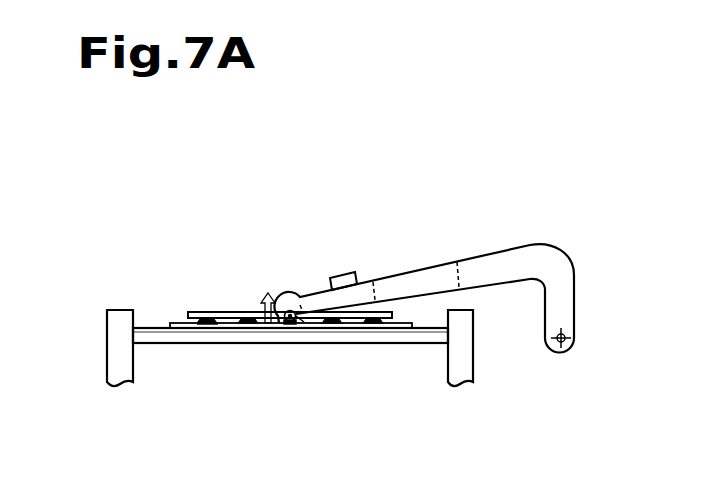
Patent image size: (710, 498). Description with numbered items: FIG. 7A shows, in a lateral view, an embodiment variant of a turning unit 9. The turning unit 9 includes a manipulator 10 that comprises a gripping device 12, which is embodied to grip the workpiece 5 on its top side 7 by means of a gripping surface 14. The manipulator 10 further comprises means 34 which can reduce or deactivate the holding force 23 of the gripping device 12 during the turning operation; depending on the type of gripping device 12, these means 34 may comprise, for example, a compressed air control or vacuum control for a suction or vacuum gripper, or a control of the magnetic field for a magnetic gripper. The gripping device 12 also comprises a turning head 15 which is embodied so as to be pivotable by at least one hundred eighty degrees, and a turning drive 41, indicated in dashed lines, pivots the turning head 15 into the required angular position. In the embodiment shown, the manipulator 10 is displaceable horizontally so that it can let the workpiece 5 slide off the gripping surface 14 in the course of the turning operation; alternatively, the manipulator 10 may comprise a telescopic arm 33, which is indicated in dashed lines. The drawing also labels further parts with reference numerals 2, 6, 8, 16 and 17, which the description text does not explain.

The seat adjustment device 2 is at (112, 202).
The workpiece 5 is at (177, 324).
The base carrier 6 is at (220, 330).
The top side 7 is at (228, 320).
The carrier beam 8 is at (150, 326).
The turning unit 9 is at (612, 123).
The manipulator 10 is at (385, 178).
The gripping device 12 is at (260, 313).
The gripping surface 14 is at (290, 330).
The turning head 15 is at (285, 305).
The pivot axis 16 is at (297, 325).
The handle pivot 17 is at (577, 330).
The holding force 23 is at (266, 300).
The telescopic arm 33 is at (420, 290).
The means 34 is at (345, 280).
The turning drive 41 is at (300, 305).